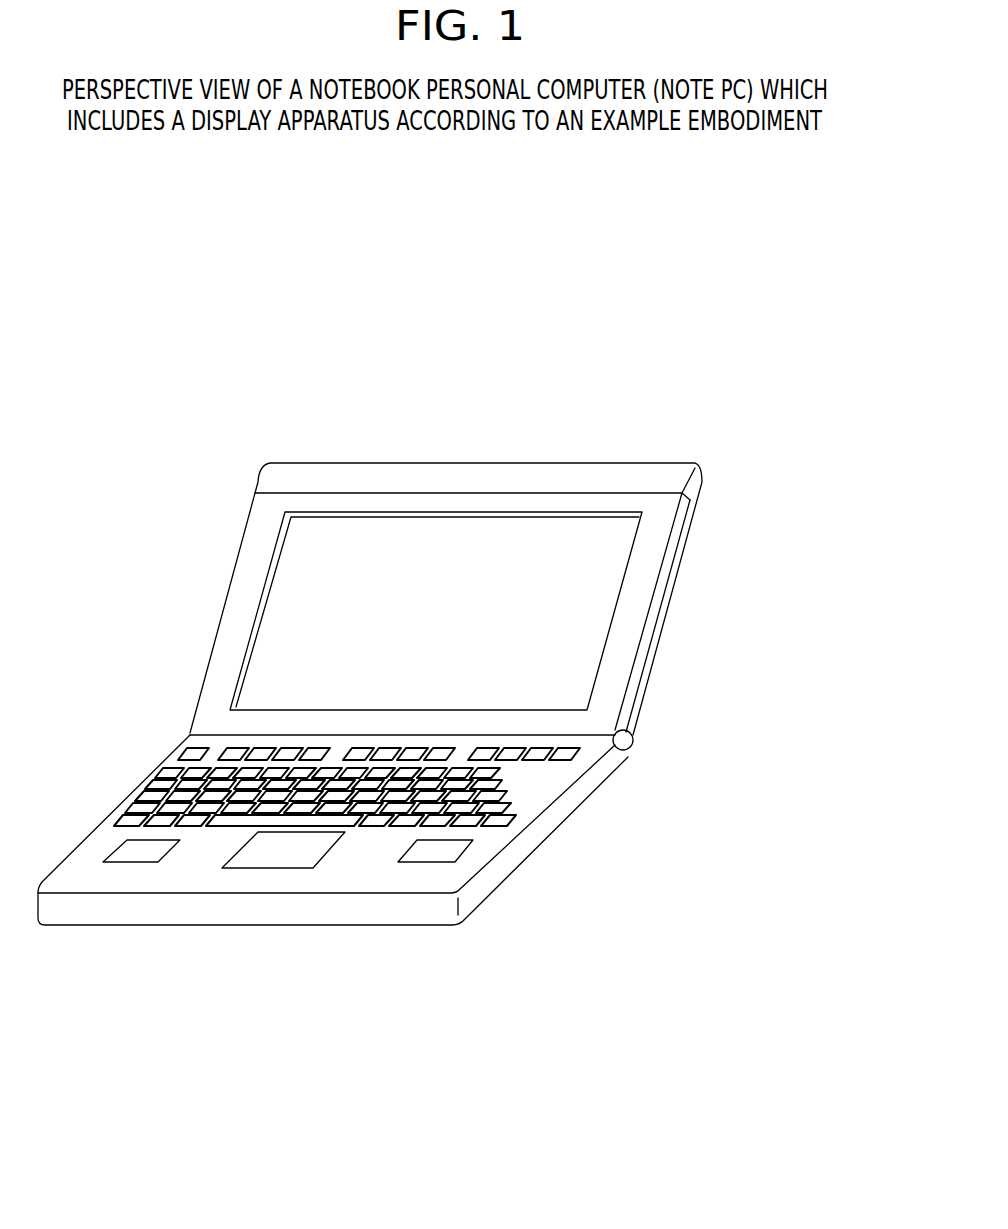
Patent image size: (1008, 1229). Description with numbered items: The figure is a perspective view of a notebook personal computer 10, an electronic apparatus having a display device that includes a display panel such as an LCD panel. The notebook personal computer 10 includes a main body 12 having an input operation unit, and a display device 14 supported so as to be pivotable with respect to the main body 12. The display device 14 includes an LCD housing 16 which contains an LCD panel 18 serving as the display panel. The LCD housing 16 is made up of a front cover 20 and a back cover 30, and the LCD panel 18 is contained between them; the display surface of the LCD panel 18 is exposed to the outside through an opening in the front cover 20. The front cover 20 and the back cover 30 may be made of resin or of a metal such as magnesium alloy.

The notebook personal computer 10 is at (478, 266).
The main body 12 is at (262, 940).
The display device 14 is at (510, 448).
The LCD housing 16 is at (755, 765).
The LCD panel 18 is at (610, 535).
The front cover 20 is at (625, 652).
The back cover 30 is at (684, 576).